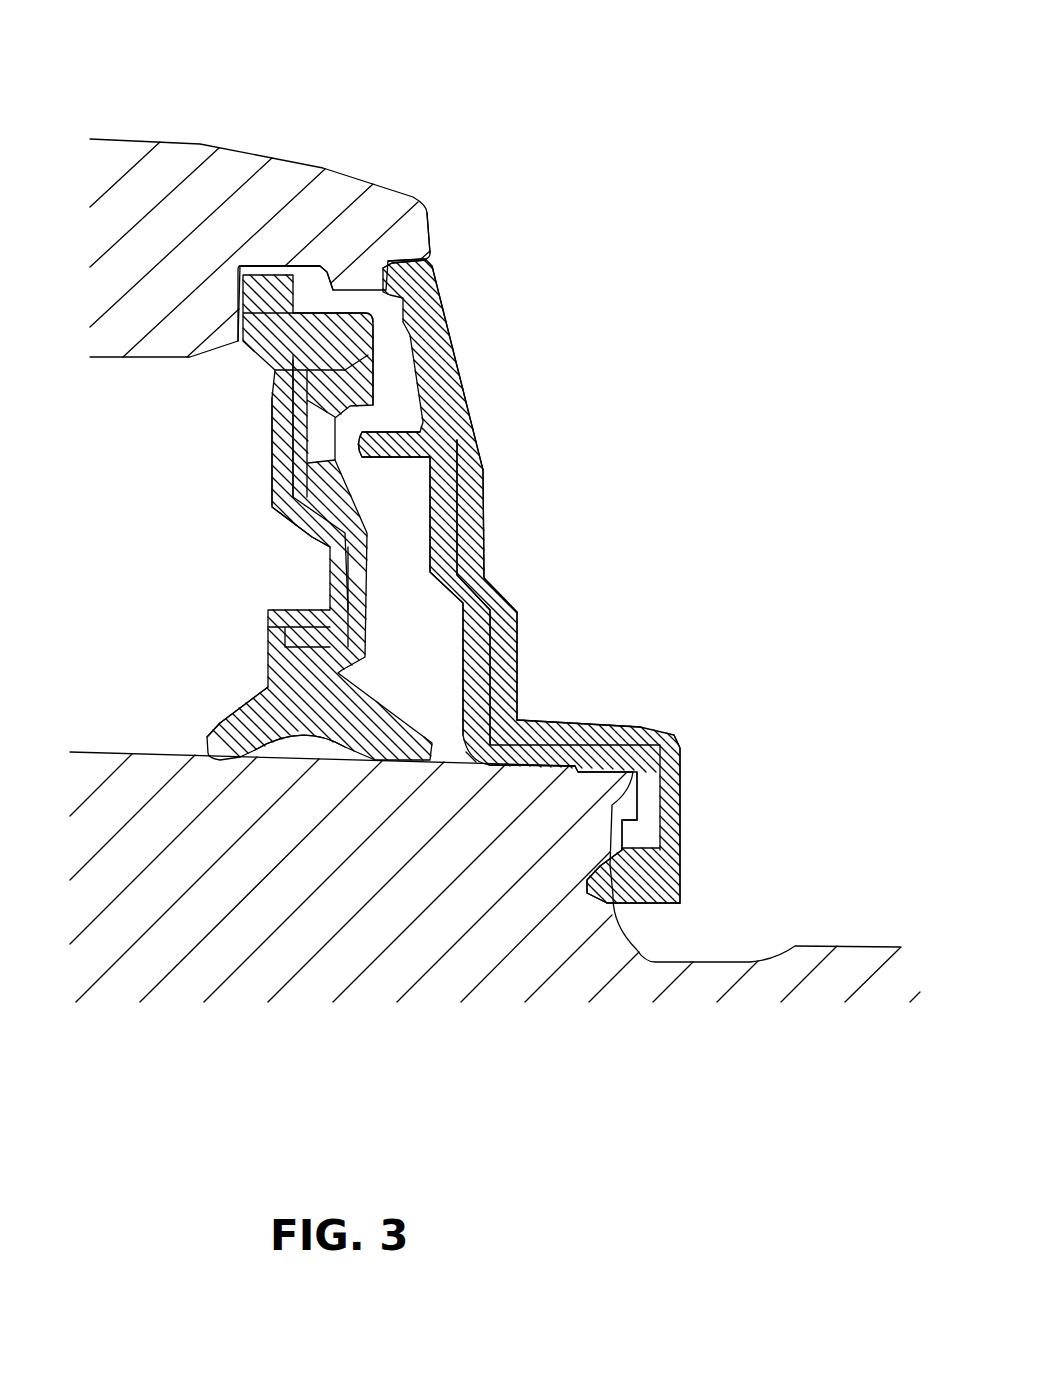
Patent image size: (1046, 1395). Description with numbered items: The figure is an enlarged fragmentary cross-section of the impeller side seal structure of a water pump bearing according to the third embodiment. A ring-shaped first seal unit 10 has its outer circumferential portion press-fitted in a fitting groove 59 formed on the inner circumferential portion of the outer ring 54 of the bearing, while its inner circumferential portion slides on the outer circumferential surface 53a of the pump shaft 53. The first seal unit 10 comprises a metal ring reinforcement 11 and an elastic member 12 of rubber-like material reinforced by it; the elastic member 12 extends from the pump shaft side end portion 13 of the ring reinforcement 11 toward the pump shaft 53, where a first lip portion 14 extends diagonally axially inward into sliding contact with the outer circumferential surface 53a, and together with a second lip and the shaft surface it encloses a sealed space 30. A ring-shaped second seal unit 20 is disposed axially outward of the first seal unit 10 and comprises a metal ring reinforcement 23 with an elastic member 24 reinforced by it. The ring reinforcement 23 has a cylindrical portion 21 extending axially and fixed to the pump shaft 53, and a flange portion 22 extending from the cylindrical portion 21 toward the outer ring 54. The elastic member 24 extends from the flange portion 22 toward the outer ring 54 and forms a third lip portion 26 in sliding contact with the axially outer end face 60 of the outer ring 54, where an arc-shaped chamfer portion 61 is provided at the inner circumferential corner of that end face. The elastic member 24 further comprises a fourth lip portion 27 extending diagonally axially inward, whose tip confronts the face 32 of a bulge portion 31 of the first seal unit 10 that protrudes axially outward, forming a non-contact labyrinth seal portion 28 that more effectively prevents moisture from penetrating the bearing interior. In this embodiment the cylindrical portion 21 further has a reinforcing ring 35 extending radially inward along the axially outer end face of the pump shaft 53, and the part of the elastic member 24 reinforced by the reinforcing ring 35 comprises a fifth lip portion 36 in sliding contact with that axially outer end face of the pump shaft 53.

The first seal unit 10 is at (270, 535).
The ring reinforcement 11 is at (287, 432).
The elastic member 12 is at (273, 500).
The pump shaft side end portion 13 is at (297, 633).
The first lip portion 14 is at (258, 703).
The second seal unit 20 is at (493, 473).
The cylindrical portion 21 is at (567, 720).
The flange portion 22 is at (440, 493).
The ring reinforcement 23 is at (612, 472).
The elastic member 24 is at (470, 550).
The third lip portion 26 is at (428, 300).
The fourth lip portion 27 is at (438, 421).
The labyrinth seal portion 28 is at (387, 408).
The sealed space 30 is at (327, 747).
The bulge portion 31 is at (378, 346).
The face 32 is at (293, 465).
The reinforcing ring 35 is at (705, 725).
The fifth lip portion 36 is at (680, 877).
The pump shaft 53 is at (230, 898).
The outer circumferential surface 53a is at (153, 755).
The outer ring 54 is at (160, 217).
The fitting groove 59 is at (280, 266).
The axially outer end face 60 is at (427, 232).
The arc-shaped chamfer portion 61 is at (403, 260).